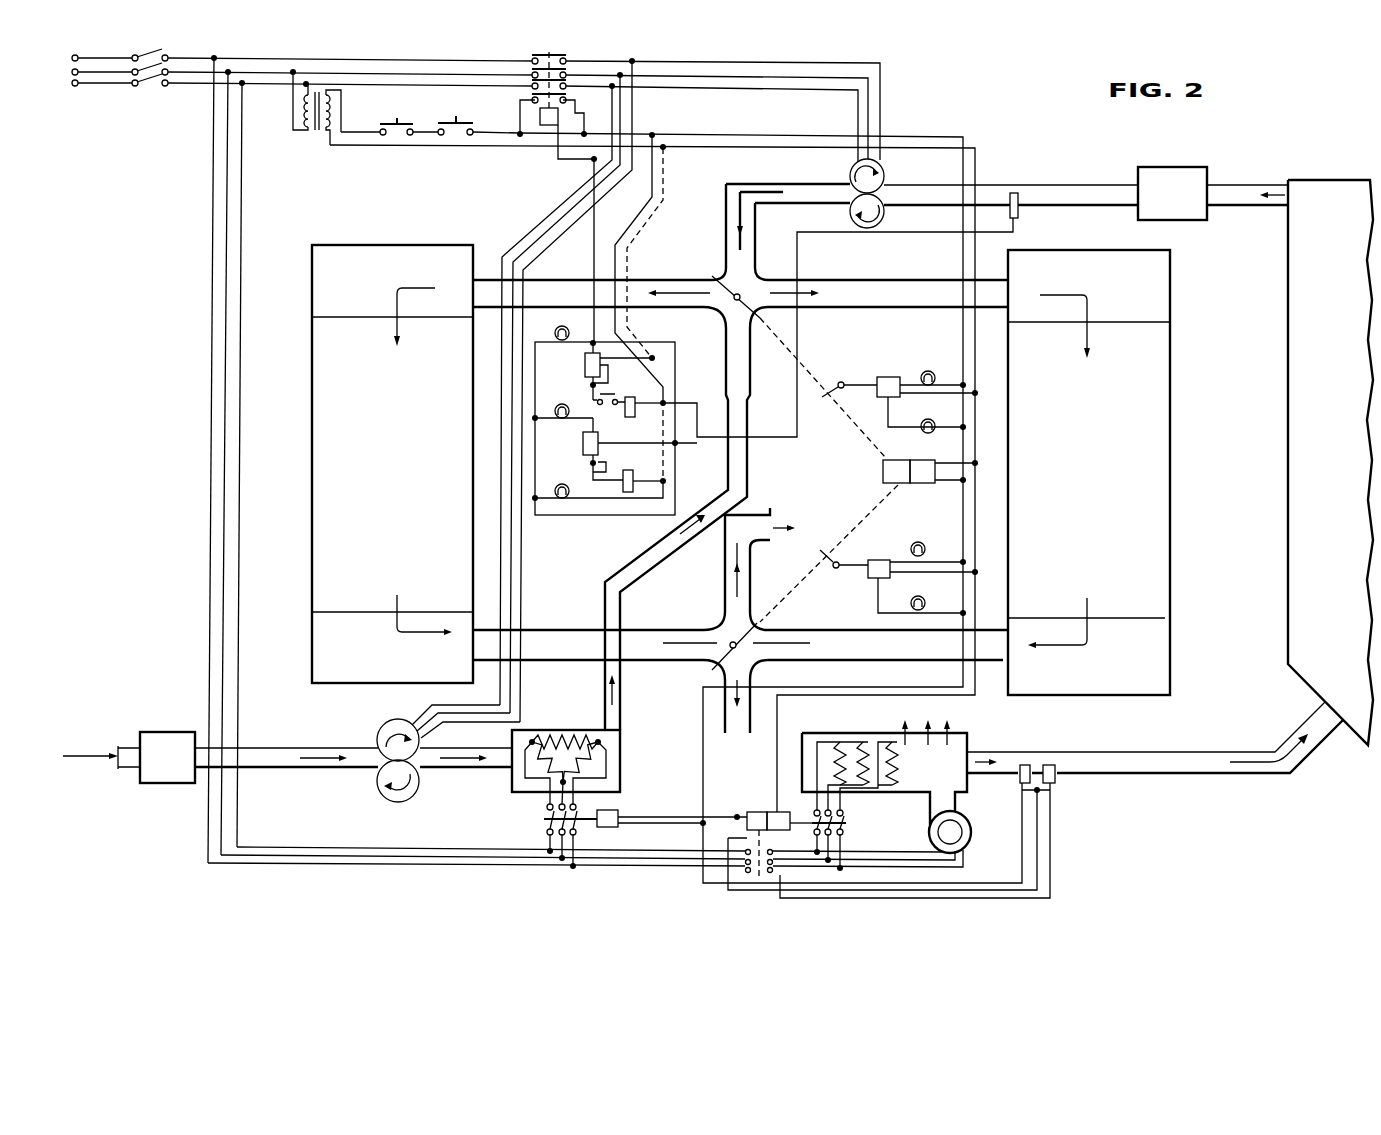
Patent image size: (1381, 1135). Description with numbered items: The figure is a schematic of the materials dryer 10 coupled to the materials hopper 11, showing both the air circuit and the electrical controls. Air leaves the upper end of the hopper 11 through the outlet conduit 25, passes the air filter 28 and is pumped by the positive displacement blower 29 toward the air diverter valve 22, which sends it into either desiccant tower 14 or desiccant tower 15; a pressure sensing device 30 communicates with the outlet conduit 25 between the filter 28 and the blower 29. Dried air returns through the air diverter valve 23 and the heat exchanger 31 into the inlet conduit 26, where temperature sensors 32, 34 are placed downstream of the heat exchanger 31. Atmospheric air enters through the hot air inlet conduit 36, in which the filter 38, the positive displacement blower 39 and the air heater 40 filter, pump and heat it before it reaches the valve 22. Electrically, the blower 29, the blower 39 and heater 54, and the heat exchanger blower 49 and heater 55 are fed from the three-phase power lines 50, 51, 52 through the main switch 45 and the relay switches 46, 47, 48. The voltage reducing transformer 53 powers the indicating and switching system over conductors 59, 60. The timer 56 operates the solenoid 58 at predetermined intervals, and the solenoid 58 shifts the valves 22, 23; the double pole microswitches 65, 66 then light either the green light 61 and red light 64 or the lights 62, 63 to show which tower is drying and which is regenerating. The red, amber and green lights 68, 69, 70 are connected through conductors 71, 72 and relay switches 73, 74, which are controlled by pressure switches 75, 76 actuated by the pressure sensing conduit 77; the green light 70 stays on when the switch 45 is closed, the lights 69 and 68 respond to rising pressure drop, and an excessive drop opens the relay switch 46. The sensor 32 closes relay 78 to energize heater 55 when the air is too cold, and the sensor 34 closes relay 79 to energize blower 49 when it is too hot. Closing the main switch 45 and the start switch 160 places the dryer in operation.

The materials dryer 10 is at (192, 262).
The materials hopper 11 is at (1283, 336).
The desiccant tower 14 is at (1170, 348).
The desiccant tower 15 is at (308, 392).
The air diverter valve 22 is at (760, 280).
The air diverter valve 23 is at (712, 620).
The outlet conduit 25 is at (1122, 186).
The inlet conduit 26 is at (1008, 752).
The air filter 28 is at (1188, 167).
The positive displacement blower 29 is at (882, 180).
The pressure sensing device 30 is at (1015, 193).
The heat exchanger 31 is at (852, 733).
The temperature sensor 32 is at (1025, 765).
The temperature sensor 34 is at (1050, 765).
The hot air inlet conduit 36 is at (328, 754).
The filter 38 is at (176, 732).
The positive displacement blower 39 is at (378, 746).
The air heater 40 is at (576, 731).
The main switch 45 is at (140, 90).
The relay switch 46 is at (563, 55).
The relay switch 47 is at (546, 826).
The relay switch 48 is at (745, 868).
The heat exchanger blower 49 is at (972, 836).
The power line 50 is at (184, 66).
The power line 51 is at (204, 80).
The power line 52 is at (174, 88).
The voltage reducing transformer 53 is at (302, 133).
The heater 54 is at (528, 760).
The heater 55 is at (846, 793).
The timer 56 is at (935, 468).
The solenoid 58 is at (883, 468).
The conductor 59 is at (374, 131).
The conductor 60 is at (372, 152).
The green indicating light 61 is at (924, 375).
The indicating light 62 is at (935, 428).
The indicating light 63 is at (925, 549).
The red indicating light 64 is at (925, 604).
The double pole microswitch 65 is at (888, 397).
The double pole microswitch 66 is at (870, 560).
The red indicating light 68 is at (555, 334).
The amber indicating light 69 is at (560, 404).
The green indicating light 70 is at (566, 492).
The conductor 71 is at (652, 206).
The conductor 72 is at (658, 213).
The relay switch 73 is at (590, 366).
The relay switch 74 is at (592, 447).
The pressure switch 75 is at (632, 400).
The pressure switch 76 is at (628, 474).
The pressure sensing conduit 77 is at (1012, 233).
The relay 78 is at (778, 812).
The relay 79 is at (753, 812).
The start switch 160 is at (460, 130).